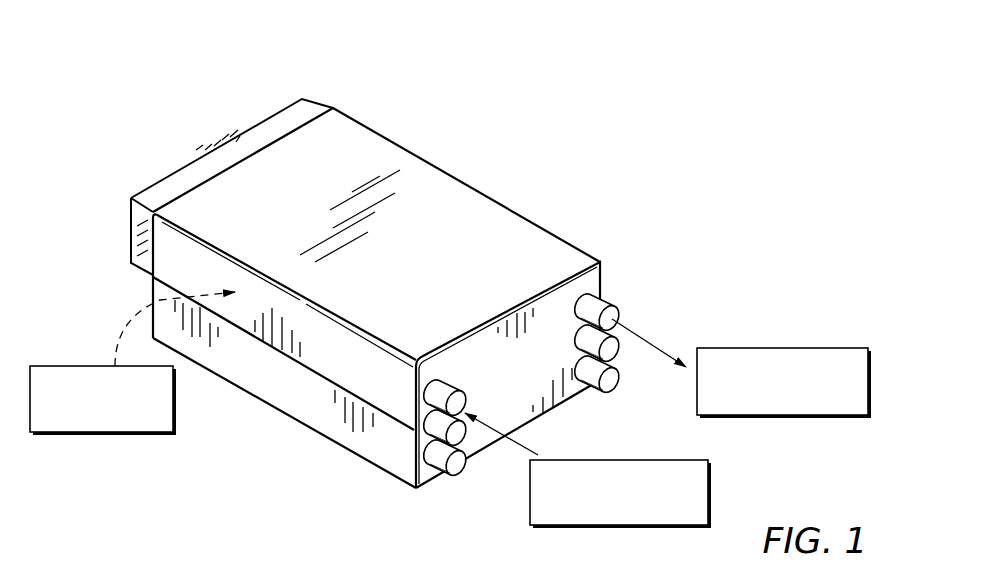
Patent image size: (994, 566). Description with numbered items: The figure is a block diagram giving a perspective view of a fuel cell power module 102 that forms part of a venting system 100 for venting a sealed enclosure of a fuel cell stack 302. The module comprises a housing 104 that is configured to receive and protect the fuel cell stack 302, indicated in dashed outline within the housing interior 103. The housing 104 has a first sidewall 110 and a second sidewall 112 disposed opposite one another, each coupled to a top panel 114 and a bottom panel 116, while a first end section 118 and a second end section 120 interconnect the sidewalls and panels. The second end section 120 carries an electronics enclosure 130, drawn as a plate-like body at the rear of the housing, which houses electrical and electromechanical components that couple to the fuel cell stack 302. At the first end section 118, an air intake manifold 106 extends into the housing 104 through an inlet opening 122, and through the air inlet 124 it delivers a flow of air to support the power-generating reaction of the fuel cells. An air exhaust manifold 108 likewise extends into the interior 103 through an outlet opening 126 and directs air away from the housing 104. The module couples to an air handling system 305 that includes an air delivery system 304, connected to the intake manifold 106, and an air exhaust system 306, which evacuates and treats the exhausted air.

The venting system 100 is at (413, 279).
The fuel cell power module 102 is at (452, 280).
The housing interior 103 is at (237, 190).
The housing 104 is at (376, 190).
The air intake manifold 106 is at (461, 421).
The air exhaust manifold 108 is at (623, 322).
The first sidewall 110 is at (284, 382).
The second sidewall 112 is at (558, 230).
The top panel 114 is at (478, 212).
The bottom panel 116 is at (230, 385).
The first end section 118 is at (444, 415).
The second end section 120 is at (147, 289).
The inlet opening 122 is at (423, 391).
The air inlet 124 is at (459, 415).
The outlet opening 126 is at (572, 321).
The electronics enclosure 130 is at (232, 154).
The fuel cell stack 302 is at (72, 366).
The air delivery system 304 is at (710, 492).
The air handling system 305 is at (847, 333).
The air exhaust system 306 is at (767, 348).